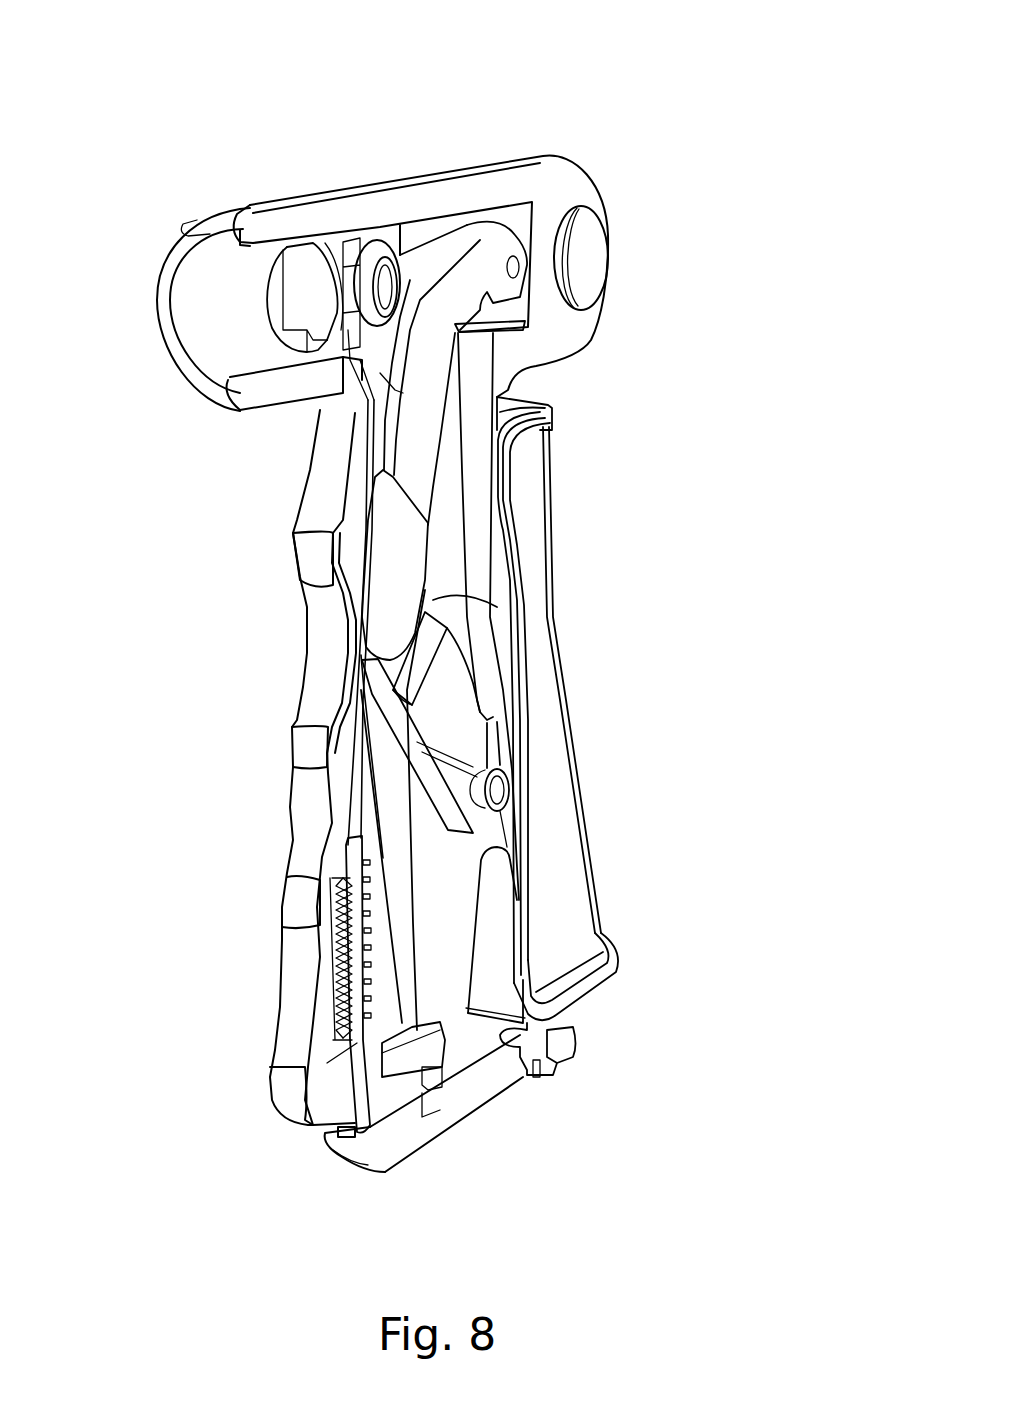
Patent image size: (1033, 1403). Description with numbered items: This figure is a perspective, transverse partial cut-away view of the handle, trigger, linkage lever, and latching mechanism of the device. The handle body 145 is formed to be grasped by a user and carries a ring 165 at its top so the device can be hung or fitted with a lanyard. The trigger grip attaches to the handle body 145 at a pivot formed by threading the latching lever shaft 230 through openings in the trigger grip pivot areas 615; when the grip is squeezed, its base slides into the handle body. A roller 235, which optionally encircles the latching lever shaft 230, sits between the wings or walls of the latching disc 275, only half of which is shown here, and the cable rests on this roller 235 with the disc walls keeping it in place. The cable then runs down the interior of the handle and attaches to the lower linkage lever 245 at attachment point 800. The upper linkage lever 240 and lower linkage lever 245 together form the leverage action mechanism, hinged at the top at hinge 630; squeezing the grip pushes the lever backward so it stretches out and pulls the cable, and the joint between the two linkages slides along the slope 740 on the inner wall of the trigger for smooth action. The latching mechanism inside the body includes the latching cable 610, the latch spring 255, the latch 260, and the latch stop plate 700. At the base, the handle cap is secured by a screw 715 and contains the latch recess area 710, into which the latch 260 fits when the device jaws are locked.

The handle body 145 is at (383, 270).
The latching lever shaft 230 is at (388, 262).
The latching disc 275 is at (343, 270).
The roller 235 is at (370, 270).
The top hinge 630 is at (495, 247).
The trigger grip pivot areas 615 is at (318, 287).
The ring 165 is at (570, 257).
The upper linkage lever 240 is at (422, 417).
The latching cable 610 is at (365, 530).
The lower linkage lever 245 is at (448, 700).
The attachment point 800 is at (500, 788).
The latch stop plate 700 is at (343, 860).
The slope 740 is at (393, 930).
The latch spring 255 is at (333, 950).
The screw 715 is at (537, 1077).
The latch recess area 710 is at (433, 1090).
The latch 260 is at (332, 1137).